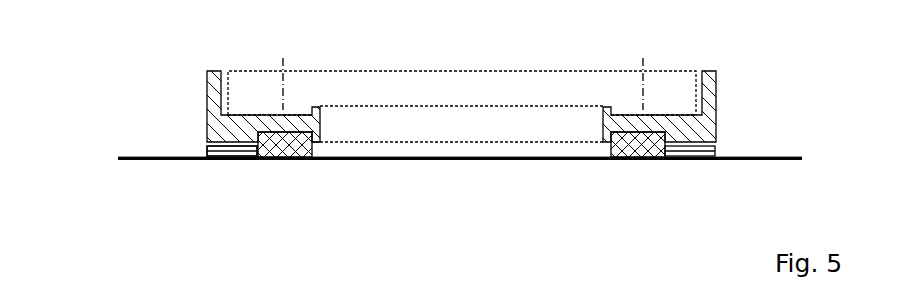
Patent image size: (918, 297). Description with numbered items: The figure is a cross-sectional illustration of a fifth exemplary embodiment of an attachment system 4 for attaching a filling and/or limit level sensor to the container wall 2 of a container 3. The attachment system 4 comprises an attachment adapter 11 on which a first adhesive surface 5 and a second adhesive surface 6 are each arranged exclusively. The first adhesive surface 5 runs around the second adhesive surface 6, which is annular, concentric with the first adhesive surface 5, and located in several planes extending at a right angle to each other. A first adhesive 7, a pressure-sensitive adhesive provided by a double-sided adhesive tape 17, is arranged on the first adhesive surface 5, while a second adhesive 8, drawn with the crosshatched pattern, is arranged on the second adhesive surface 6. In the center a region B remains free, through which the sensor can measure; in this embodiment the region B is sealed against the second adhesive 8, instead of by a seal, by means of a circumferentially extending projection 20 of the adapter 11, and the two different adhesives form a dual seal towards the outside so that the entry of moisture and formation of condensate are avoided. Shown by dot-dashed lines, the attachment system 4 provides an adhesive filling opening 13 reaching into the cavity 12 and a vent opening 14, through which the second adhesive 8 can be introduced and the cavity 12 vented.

The container wall 2 is at (143, 159).
The container 3 is at (187, 159).
The attachment system 4 is at (454, 137).
The first adhesive surface 5 is at (229, 150).
The second adhesive surface 6 is at (270, 138).
The first adhesive 7 is at (216, 157).
The second adhesive 8 is at (645, 145).
The attachment adapter 11 is at (230, 128).
The cavity 12 is at (659, 106).
The adhesive filling opening 13 is at (282, 80).
The vent opening 14 is at (644, 85).
The double-sided adhesive tape 17 is at (697, 152).
The circumferentially extending projection 20 is at (318, 150).
The region that remains free B is at (465, 150).